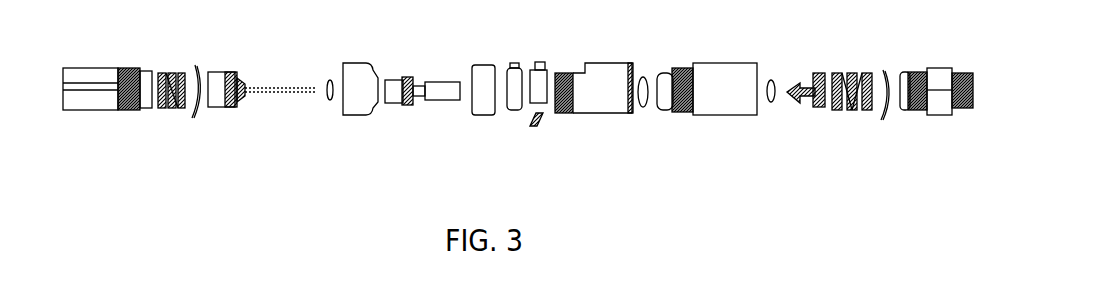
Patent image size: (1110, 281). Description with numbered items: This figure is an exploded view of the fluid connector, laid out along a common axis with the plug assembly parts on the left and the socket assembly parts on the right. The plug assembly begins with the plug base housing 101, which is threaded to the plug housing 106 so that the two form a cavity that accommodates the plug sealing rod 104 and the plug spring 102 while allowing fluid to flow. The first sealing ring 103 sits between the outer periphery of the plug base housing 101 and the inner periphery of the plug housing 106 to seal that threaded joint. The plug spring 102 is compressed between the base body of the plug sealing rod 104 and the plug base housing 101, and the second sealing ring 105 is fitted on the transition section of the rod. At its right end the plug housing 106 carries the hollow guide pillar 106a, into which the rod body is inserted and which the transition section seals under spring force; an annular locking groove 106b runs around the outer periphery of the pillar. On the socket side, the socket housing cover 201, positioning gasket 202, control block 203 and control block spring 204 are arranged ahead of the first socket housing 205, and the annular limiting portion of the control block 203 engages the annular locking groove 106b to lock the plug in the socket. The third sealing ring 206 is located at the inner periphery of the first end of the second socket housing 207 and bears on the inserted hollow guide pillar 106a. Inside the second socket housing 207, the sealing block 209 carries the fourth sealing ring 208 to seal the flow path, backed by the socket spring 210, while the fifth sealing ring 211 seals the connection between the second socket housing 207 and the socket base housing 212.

The plug base housing 101 is at (136, 110).
The plug spring 102 is at (163, 72).
The first sealing ring 103 is at (196, 113).
The plug sealing rod 104 is at (220, 70).
The second sealing ring 105 is at (328, 104).
The plug housing 106 is at (360, 64).
The hollow guide pillar 106a is at (438, 82).
The annular locking groove 106b is at (413, 97).
The socket housing cover 201 is at (476, 114).
The positioning gasket 202 is at (513, 66).
The control block 203 is at (541, 64).
The control block spring 204 is at (544, 123).
The first socket housing 205 is at (572, 113).
The third sealing ring 206 is at (644, 77).
The second socket housing 207 is at (685, 112).
The fourth sealing ring 208 is at (771, 80).
The sealing block 209 is at (809, 105).
The socket spring 210 is at (866, 74).
The fifth sealing ring 211 is at (885, 118).
The socket base housing 212 is at (966, 73).